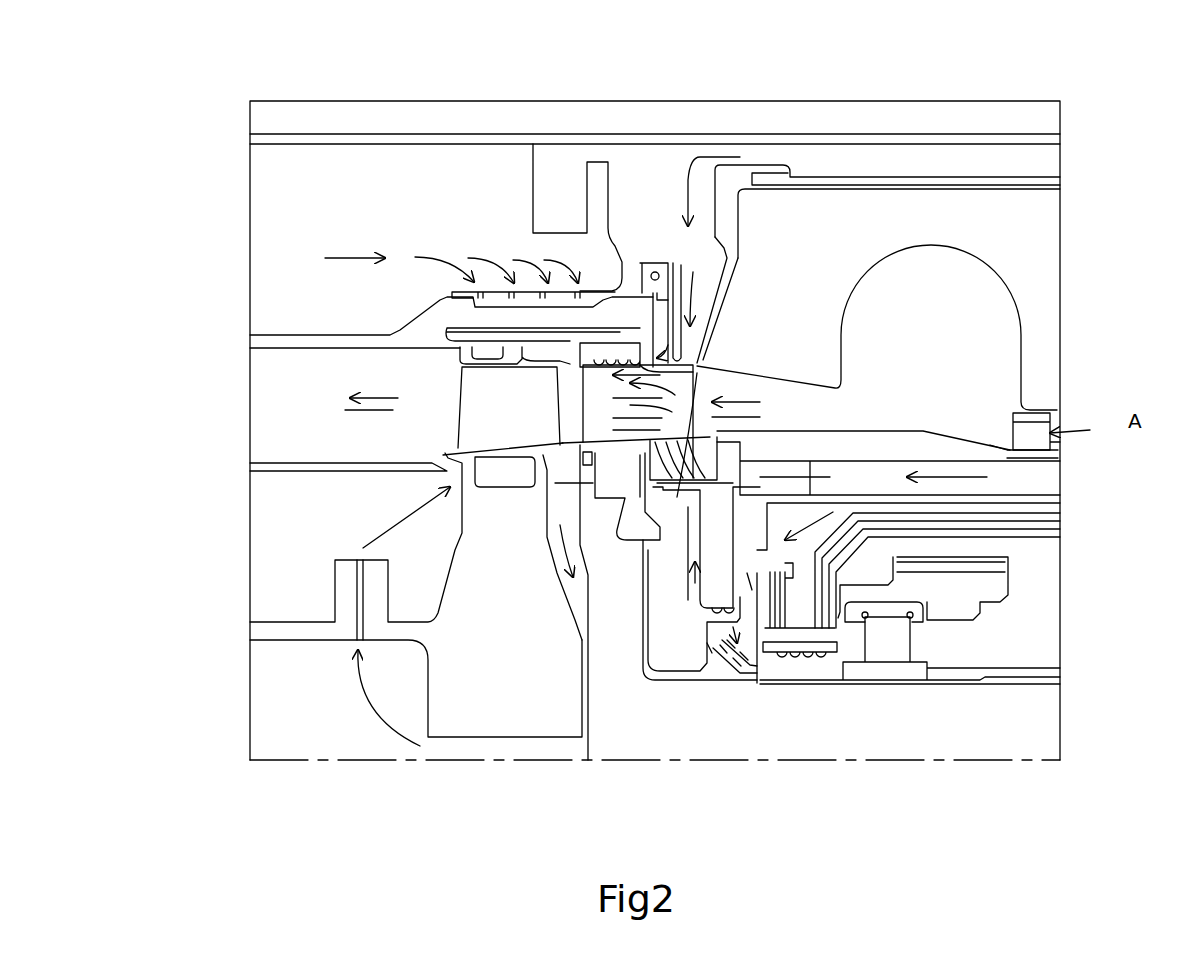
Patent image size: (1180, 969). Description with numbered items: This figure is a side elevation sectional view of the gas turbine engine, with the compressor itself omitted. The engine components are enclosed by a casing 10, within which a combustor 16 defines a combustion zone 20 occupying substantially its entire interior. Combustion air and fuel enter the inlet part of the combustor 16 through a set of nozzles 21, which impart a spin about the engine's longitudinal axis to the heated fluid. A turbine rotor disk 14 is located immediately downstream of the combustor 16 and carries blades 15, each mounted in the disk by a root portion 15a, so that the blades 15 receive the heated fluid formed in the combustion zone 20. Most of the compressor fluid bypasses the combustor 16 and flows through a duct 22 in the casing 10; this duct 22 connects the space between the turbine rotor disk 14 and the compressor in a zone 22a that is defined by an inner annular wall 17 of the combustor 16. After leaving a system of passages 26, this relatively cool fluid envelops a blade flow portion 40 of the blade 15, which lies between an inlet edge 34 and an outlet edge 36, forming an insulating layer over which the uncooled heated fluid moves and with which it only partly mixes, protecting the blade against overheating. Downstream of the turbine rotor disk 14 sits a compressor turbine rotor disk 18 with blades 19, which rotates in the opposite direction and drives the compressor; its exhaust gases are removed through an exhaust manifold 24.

The casing 10 is at (857, 96).
The turbine rotor disk 14 is at (675, 738).
The blade 15 is at (542, 440).
The root portion 15a is at (625, 537).
The combustor 16 is at (878, 213).
The inner annular wall 17 is at (867, 445).
The compressor turbine rotor disk 18 is at (493, 728).
The blades 19 is at (490, 437).
The combustion zone 20 is at (940, 321).
The nozzles 21 is at (1033, 432).
The duct 22 is at (1043, 484).
The zone 22a is at (733, 483).
The exhaust manifold 24 is at (288, 405).
The system of passages 26 is at (687, 470).
The inlet edge 34 is at (700, 380).
The outlet edge 36 is at (583, 402).
The blade flow portion 40 is at (608, 417).